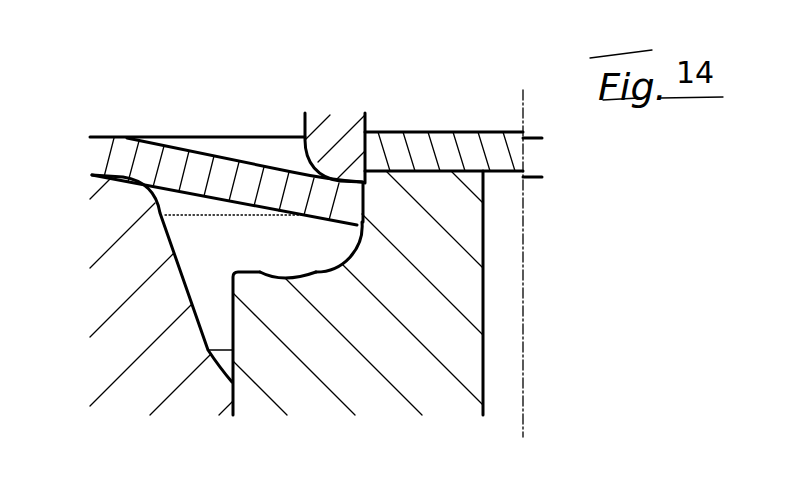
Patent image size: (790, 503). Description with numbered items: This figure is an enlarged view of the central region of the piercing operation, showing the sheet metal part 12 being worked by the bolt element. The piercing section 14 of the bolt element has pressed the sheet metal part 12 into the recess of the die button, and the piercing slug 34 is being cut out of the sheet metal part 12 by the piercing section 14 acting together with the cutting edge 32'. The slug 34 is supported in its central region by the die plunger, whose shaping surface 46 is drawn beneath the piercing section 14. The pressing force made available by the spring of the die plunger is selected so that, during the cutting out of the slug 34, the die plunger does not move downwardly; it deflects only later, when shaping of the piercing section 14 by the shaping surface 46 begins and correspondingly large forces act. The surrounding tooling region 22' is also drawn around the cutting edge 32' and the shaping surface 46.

The sheet metal part 12 is at (97, 148).
The piercing section 14 is at (304, 119).
The slug 34 is at (442, 131).
The housing 22' is at (381, 293).
The shaping surface 46 is at (345, 232).
The cutting edge 32' is at (487, 193).